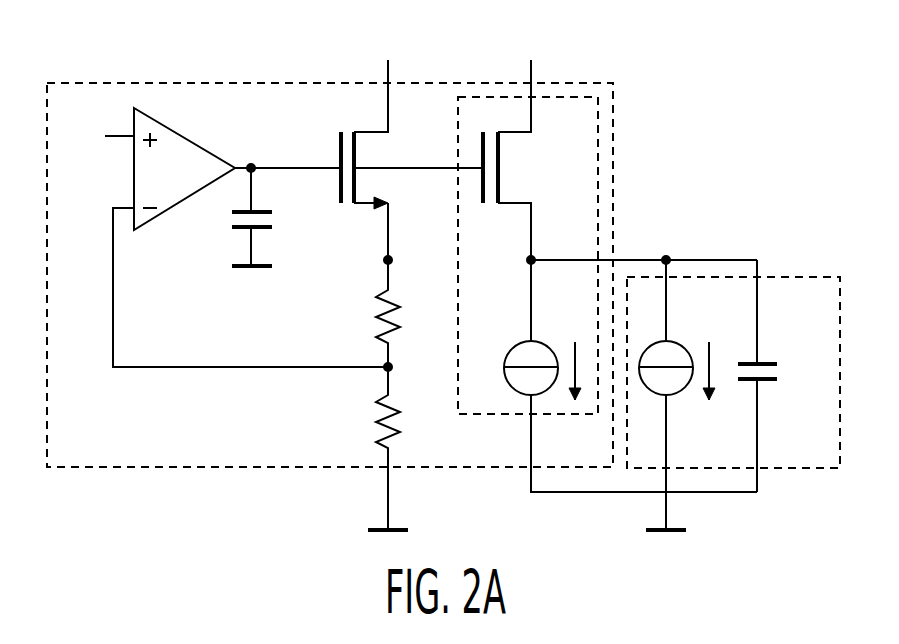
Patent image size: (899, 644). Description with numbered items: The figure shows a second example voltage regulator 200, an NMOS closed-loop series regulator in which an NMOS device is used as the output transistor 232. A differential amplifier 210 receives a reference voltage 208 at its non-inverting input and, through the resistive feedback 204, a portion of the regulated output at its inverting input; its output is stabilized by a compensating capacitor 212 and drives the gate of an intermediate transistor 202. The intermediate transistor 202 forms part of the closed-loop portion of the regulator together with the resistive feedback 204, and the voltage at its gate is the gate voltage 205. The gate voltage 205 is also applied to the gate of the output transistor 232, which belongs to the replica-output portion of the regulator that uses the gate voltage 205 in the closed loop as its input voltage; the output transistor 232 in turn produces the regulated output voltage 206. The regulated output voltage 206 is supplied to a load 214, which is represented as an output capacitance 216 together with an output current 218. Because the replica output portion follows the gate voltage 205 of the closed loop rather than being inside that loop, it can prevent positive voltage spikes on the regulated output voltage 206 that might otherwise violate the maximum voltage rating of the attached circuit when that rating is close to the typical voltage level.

The second example voltage regulator 200 is at (117, 83).
The intermediate transistor 202 is at (352, 205).
The resistive feedback 204 is at (290, 369).
The gate voltage 205 is at (430, 170).
The regulated output voltage 206 is at (697, 258).
The reference voltage 208 is at (82, 152).
The differential amplifier 210 is at (193, 143).
The compensating capacitor 212 is at (232, 229).
The load 214 is at (790, 276).
The output capacitance 216 is at (772, 381).
The output current 218 is at (685, 390).
The output transistor 232 is at (498, 205).